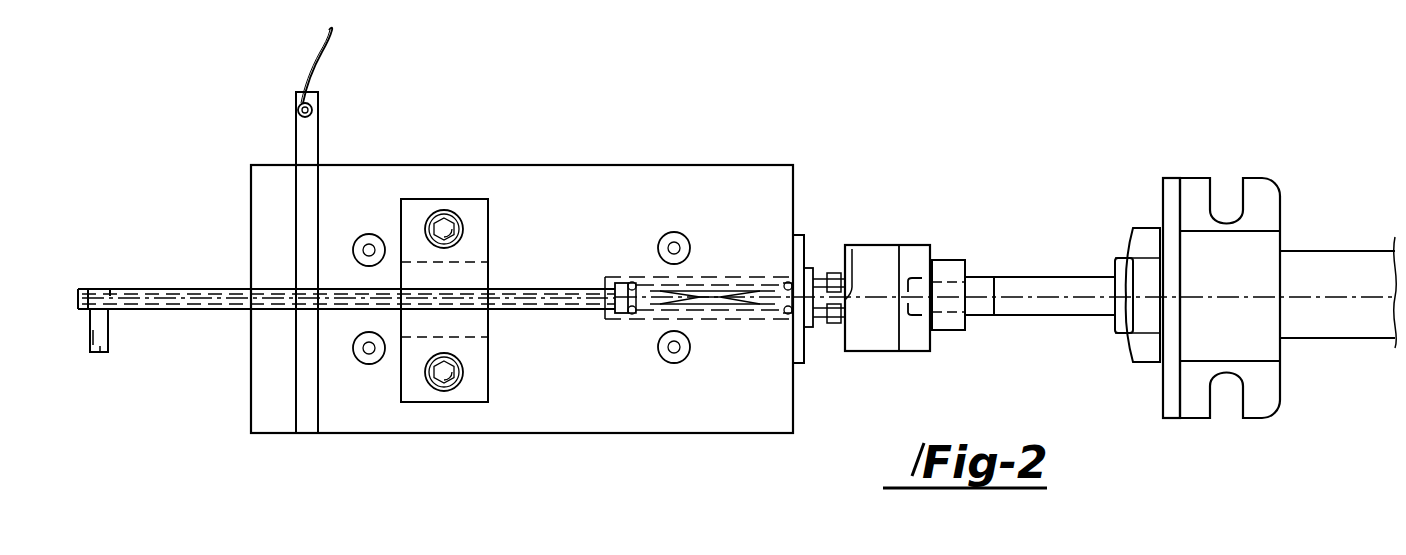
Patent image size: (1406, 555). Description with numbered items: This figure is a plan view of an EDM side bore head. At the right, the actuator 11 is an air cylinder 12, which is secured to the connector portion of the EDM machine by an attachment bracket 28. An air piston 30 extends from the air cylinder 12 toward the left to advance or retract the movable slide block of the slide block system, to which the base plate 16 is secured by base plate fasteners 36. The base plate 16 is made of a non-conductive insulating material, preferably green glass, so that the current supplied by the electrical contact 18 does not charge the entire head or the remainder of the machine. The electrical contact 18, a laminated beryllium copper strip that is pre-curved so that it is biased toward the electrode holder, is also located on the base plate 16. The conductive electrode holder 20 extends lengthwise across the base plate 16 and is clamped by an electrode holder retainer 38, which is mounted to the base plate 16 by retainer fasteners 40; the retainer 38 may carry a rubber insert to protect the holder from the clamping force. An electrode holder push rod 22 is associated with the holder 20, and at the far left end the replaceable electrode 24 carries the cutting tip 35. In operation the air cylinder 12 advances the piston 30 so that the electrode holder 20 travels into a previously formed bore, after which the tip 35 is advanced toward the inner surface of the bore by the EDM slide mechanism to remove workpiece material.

The actuator 11 is at (1115, 268).
The air cylinder 12 is at (1305, 263).
The base plate 16 is at (738, 186).
The electrical contact 18 is at (308, 156).
The conductive electrode holder 20 is at (213, 310).
The electrode holder push rod 22 is at (197, 289).
The replaceable electrode 24 is at (93, 326).
The attachment bracket 28 is at (1193, 190).
The air piston 30 is at (1020, 305).
The cutting tip 35 is at (103, 346).
The base plate fasteners 36 is at (373, 233).
The electrode holder retainer 38 is at (478, 248).
The retainer fasteners 40 is at (448, 224).